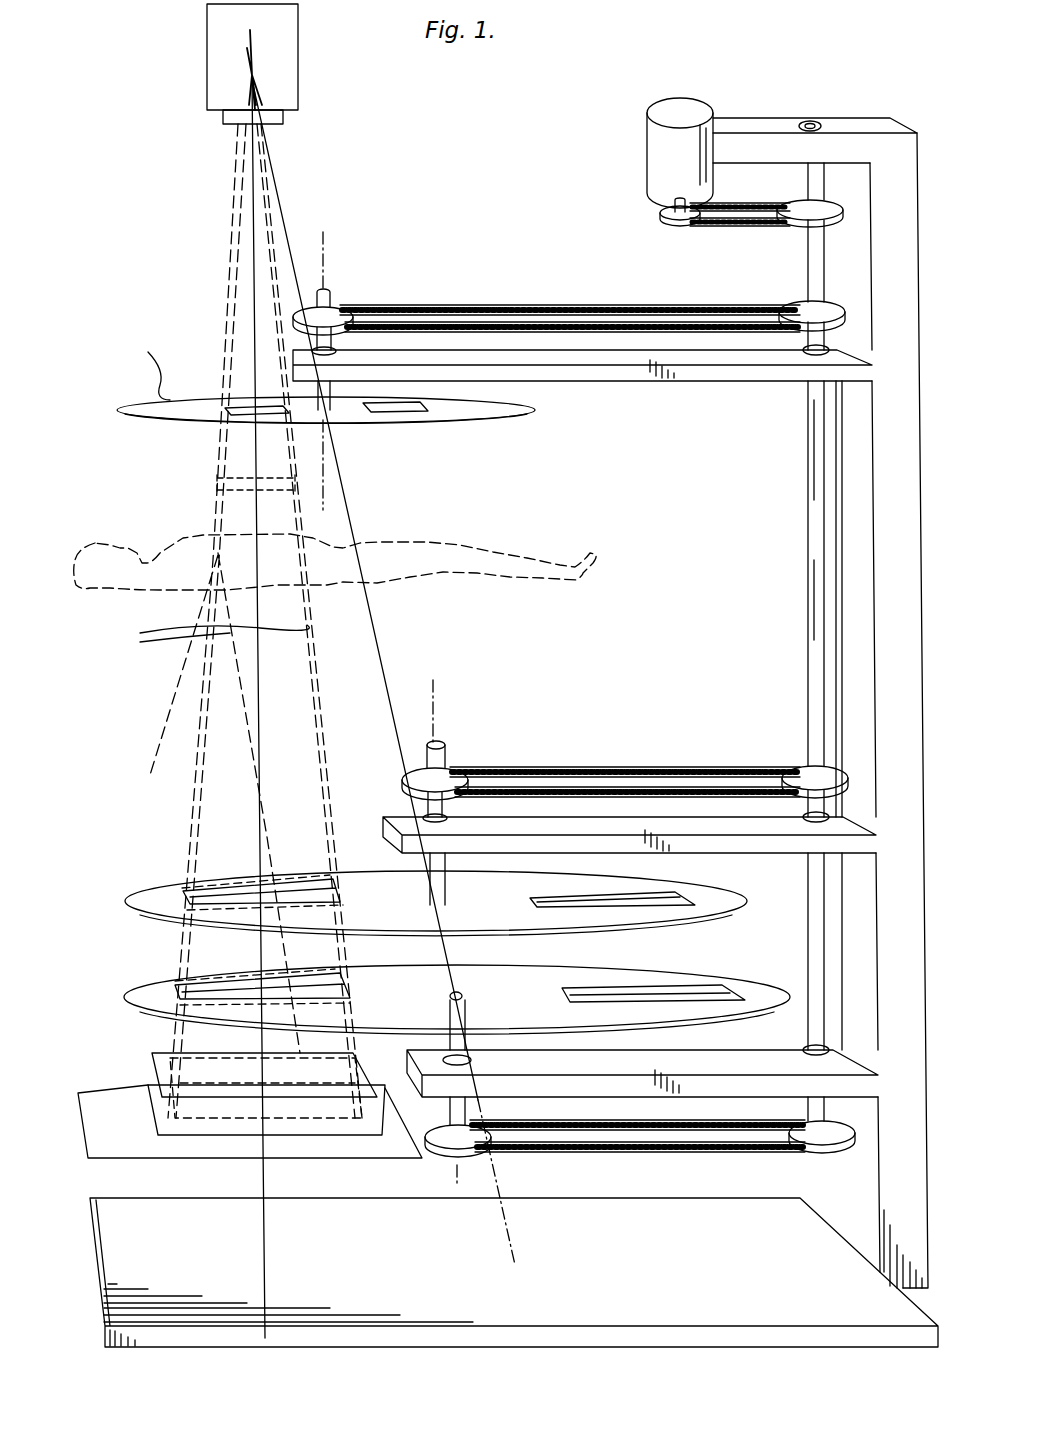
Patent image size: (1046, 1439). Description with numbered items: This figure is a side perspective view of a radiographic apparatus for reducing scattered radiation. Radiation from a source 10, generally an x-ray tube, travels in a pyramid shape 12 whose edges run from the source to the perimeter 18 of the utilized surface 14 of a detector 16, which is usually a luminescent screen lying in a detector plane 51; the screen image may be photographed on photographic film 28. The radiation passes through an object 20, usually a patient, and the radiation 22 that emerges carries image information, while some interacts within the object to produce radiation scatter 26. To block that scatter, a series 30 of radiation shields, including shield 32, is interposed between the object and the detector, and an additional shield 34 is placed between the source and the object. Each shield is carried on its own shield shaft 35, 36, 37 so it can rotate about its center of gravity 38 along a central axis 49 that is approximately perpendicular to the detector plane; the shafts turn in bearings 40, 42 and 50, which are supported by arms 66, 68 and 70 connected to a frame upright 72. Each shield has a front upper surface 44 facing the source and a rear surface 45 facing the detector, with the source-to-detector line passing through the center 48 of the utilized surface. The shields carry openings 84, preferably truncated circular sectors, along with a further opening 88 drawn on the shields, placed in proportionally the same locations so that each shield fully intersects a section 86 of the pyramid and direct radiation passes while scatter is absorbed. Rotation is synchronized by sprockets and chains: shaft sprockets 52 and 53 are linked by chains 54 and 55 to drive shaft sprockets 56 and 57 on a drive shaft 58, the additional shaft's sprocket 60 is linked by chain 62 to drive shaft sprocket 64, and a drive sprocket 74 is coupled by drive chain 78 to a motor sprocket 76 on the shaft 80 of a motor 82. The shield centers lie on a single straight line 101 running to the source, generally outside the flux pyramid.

The source 10 is at (207, 30).
The pyramid shape 12 is at (170, 807).
The utilized surface 14 is at (160, 1060).
The detector 16 is at (152, 1068).
The perimeter 18 is at (220, 1070).
The object 20 is at (100, 540).
The radiation 22 is at (203, 632).
The radiation scatter 26 is at (340, 708).
The photographic film 28 is at (150, 1110).
The series of radiation shields 30 is at (104, 960).
The radiation shield 32 is at (122, 996).
The additional shield 34 is at (120, 407).
The shield shaft 35 is at (452, 1035).
The shield shaft 36 is at (445, 752).
The additional shield shaft 37 is at (335, 318).
The center of gravity 38 is at (345, 440).
The bearing 40 is at (470, 1045).
The bearing 42 is at (385, 822).
The upper surface 44 is at (320, 976).
The rear shield surface 45 is at (492, 425).
The center 48 is at (262, 1080).
The central axis 49 is at (332, 238).
The bearing 50 is at (320, 350).
The detector plane 51 is at (88, 1148).
The shaft sprocket 52 is at (473, 1162).
The shaft sprocket 53 is at (460, 770).
The chain 54 is at (596, 1152).
The chain 55 is at (680, 765).
The drive shaft sprocket 56 is at (797, 1148).
The drive shaft sprocket 57 is at (797, 768).
The drive shaft 58 is at (808, 632).
The sprocket 60 is at (345, 300).
The chain 62 is at (592, 285).
The drive shaft sprocket 64 is at (790, 300).
The arm 66 is at (748, 1062).
The arm 68 is at (742, 852).
The arm 70 is at (655, 375).
The frame upright 72 is at (887, 535).
The drive sprocket 74 is at (790, 203).
The motor sprocket 76 is at (262, 752).
The drive chain 78 is at (722, 226).
The shaft 80 is at (672, 200).
The motor 82 is at (647, 125).
The openings 84 is at (235, 425).
The section 86 is at (217, 490).
The second disc slot 88 is at (362, 430).
The line 101 is at (520, 1242).